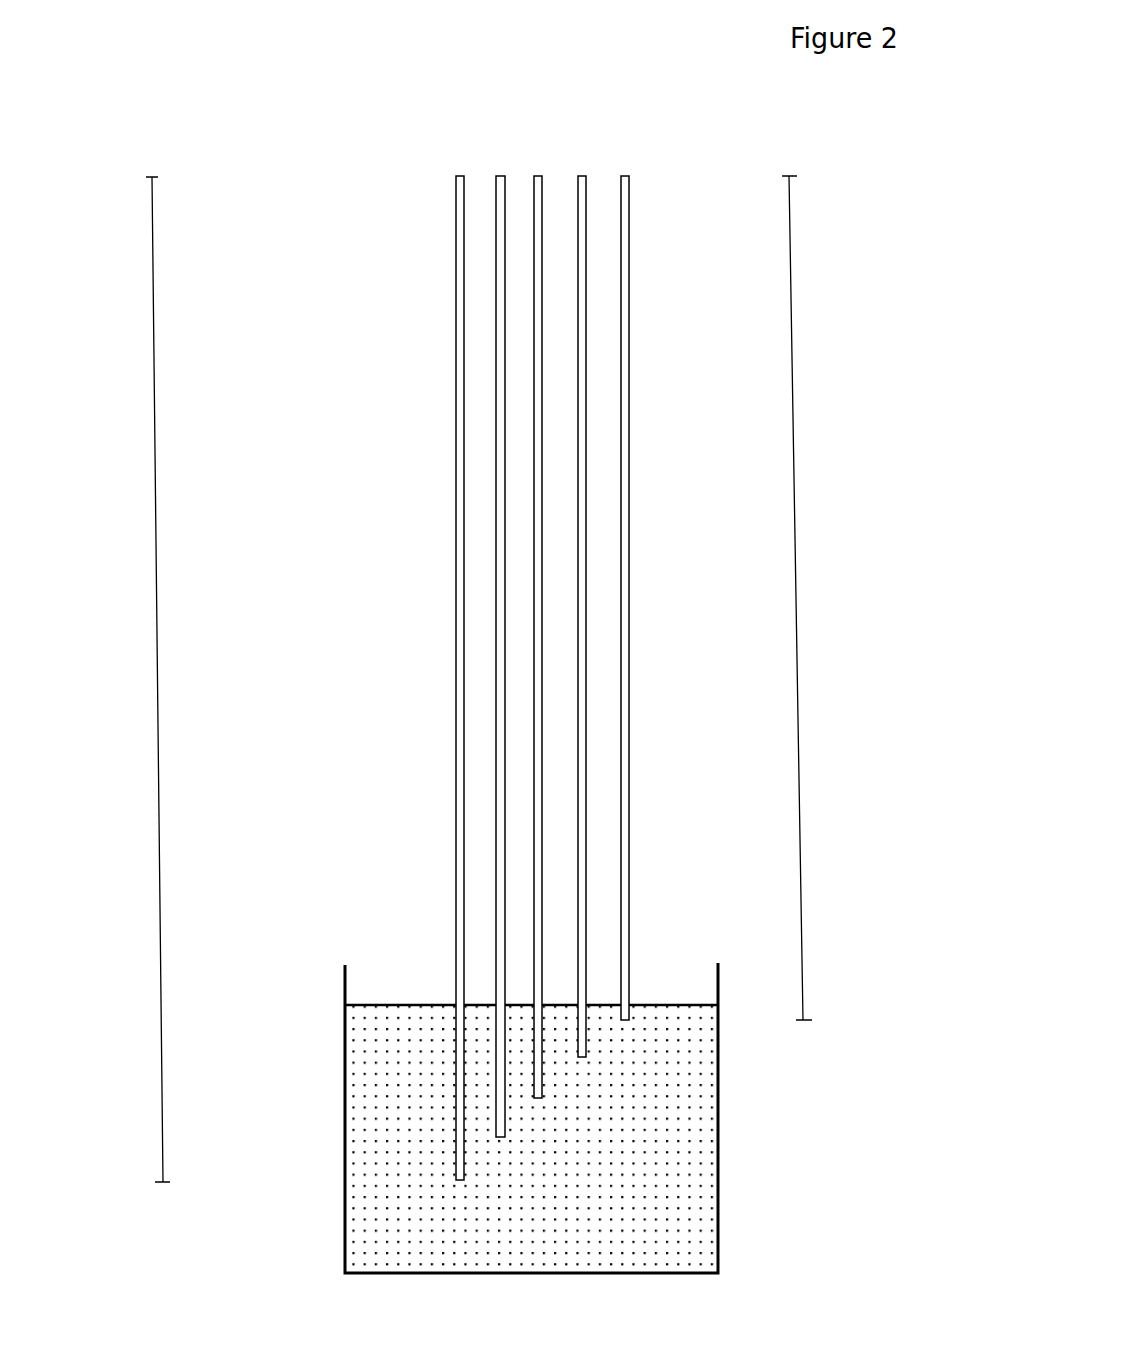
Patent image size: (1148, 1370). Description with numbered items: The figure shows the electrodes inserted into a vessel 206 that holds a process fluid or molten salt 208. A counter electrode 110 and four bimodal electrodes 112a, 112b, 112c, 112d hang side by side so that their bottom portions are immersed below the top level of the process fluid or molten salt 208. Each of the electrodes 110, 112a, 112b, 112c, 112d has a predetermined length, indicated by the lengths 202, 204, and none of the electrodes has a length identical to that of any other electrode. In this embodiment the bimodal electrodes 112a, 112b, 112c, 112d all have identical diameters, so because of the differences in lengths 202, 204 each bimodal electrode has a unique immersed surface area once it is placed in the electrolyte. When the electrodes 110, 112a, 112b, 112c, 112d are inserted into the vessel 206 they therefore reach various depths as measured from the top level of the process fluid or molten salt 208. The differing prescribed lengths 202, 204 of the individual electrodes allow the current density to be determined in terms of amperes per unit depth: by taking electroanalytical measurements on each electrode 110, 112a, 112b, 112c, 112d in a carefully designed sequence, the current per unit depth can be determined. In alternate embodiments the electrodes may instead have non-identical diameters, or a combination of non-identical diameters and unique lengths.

The counter electrode 110 is at (538, 178).
The bimodal electrode 112a is at (455, 178).
The bimodal electrode 112b is at (506, 176).
The bimodal electrode 112c is at (584, 182).
The bimodal electrode 112d is at (630, 196).
The predetermined length 202 is at (157, 813).
The predetermined length 204 is at (798, 770).
The vessel 206 is at (345, 1040).
The process fluid or molten salt 208 is at (400, 1003).